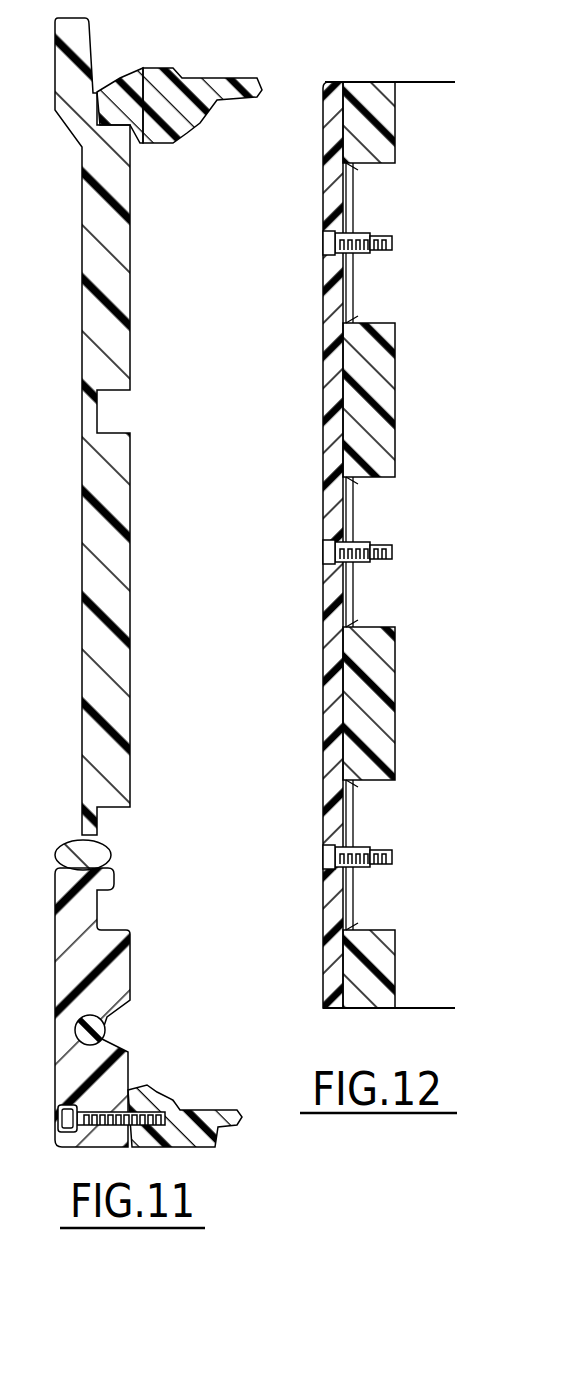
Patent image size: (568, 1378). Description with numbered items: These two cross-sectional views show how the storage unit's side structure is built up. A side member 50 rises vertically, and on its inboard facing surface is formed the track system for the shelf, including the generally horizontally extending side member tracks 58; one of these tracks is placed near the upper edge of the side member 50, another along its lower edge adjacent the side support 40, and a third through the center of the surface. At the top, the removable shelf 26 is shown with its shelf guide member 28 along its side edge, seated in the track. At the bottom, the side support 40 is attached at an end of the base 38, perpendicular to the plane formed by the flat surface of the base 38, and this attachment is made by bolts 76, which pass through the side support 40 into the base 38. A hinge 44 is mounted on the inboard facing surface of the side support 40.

In FIG. 11, the removable shelf 26 is at (185, 85).
In FIG. 11, the shelf guide members 28 is at (107, 90).
In FIG. 11, the base 38 is at (185, 1127).
In FIG. 12, the base 38 is at (392, 686).
In FIG. 11, the side supports 40 is at (72, 940).
In FIG. 12, the side supports 40 is at (332, 688).
In FIG. 11, the hinges 44 is at (108, 1028).
In FIG. 11, the side members 50 is at (68, 505).
In FIG. 11, the horizontally extending side member tracks 58 is at (110, 133).
In FIG. 11, the bolts 76 is at (58, 1117).
In FIG. 12, the bolts 76 is at (322, 242).